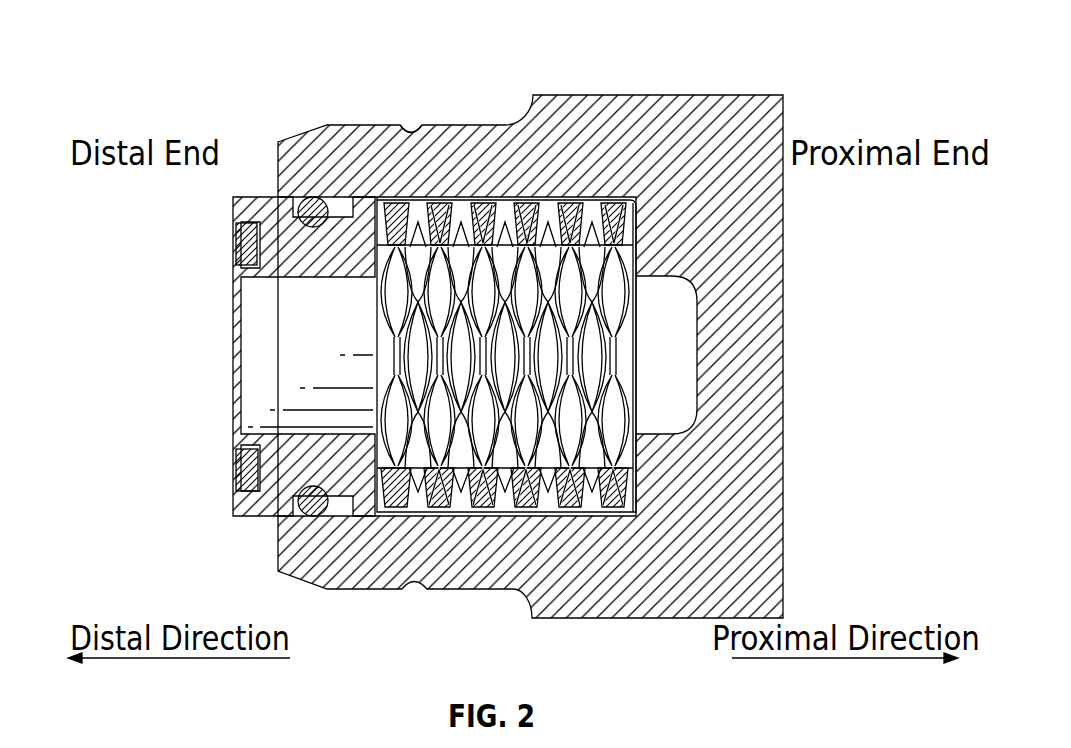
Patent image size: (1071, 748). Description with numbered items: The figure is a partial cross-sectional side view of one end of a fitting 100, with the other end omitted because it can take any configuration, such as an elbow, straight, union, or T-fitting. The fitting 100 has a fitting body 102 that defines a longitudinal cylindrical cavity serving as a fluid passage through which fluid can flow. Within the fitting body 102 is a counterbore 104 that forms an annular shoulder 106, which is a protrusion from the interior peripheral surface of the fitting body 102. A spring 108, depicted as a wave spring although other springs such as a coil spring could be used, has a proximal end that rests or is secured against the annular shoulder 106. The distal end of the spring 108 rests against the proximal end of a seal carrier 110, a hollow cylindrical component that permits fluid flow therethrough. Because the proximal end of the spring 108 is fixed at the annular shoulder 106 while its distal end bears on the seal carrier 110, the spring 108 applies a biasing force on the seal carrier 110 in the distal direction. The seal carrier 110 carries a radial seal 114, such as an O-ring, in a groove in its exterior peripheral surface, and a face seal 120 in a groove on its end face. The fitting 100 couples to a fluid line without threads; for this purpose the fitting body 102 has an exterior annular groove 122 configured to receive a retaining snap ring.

The fitting 100 is at (245, 58).
The fitting body 102 is at (758, 95).
The counterbore 104 is at (540, 208).
The annular shoulder 106 is at (630, 212).
The spring 108 is at (443, 205).
The seal carrier 110 is at (272, 196).
The radial seal 114 is at (322, 207).
The face seal 120 is at (240, 242).
The exterior annular groove 122 is at (414, 131).